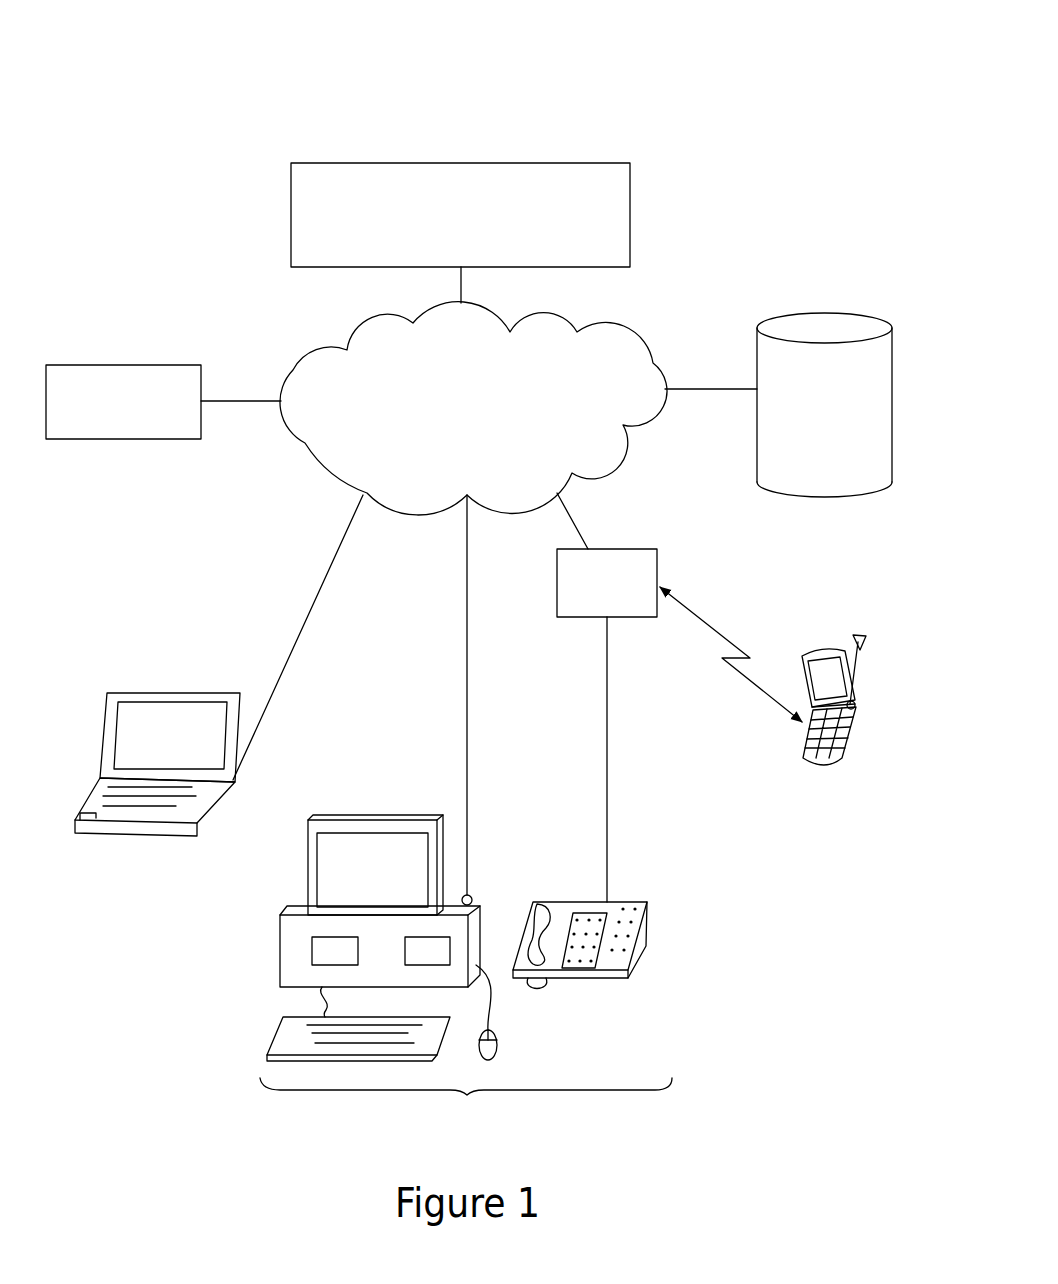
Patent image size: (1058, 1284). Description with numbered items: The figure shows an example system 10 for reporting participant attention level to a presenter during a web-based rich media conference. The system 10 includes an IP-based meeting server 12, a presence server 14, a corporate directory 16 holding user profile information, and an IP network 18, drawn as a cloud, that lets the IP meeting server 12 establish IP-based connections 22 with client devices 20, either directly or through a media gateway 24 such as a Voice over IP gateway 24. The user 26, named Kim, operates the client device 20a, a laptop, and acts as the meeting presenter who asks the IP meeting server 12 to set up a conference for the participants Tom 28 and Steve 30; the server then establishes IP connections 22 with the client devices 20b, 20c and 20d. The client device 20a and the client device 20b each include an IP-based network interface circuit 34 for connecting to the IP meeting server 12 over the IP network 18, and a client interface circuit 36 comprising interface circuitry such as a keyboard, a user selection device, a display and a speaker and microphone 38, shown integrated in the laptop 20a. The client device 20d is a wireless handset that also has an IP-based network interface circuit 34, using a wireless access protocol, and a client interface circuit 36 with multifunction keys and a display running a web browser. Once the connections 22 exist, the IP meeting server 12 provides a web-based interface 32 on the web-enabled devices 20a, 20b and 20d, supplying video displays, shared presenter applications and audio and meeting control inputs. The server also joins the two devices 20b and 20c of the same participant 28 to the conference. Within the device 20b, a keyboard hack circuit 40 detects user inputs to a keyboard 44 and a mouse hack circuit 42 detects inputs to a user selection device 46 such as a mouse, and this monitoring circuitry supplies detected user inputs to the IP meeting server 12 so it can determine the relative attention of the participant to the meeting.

The system 10 is at (643, 74).
The IP-based meeting server 12 is at (471, 236).
The presence server 14 is at (123, 367).
The corporate directory 16 is at (844, 452).
The IP network 18 is at (482, 421).
The client devices 20 is at (203, 602).
The client device 20a is at (122, 832).
The client device 20b is at (357, 808).
The client device 20c is at (633, 902).
The client device 20d is at (838, 760).
The IP-based connections 22 is at (467, 548).
The media gateway 24 is at (649, 549).
The user 26 is at (125, 667).
The meeting participant 28 is at (469, 1099).
The meeting participant 30 is at (882, 612).
The web-based interface 32 is at (140, 733).
The IP-based network interface circuit 34 is at (234, 780).
The client interface circuit 36 is at (275, 938).
The speaker and microphone 38 is at (76, 823).
The keyboard hack circuit 40 is at (340, 966).
The mouse hack circuit 42 is at (427, 937).
The keyboard 44 is at (290, 1035).
The user selection device 46 is at (497, 1045).